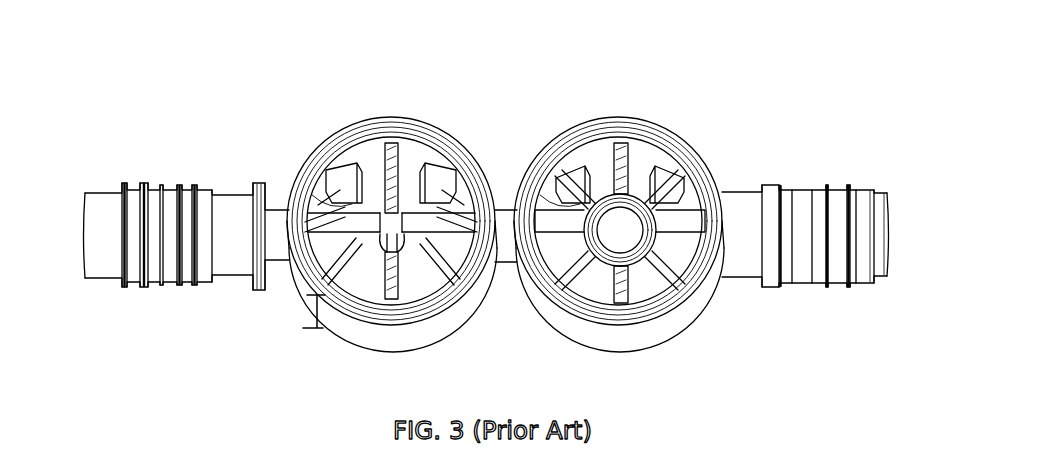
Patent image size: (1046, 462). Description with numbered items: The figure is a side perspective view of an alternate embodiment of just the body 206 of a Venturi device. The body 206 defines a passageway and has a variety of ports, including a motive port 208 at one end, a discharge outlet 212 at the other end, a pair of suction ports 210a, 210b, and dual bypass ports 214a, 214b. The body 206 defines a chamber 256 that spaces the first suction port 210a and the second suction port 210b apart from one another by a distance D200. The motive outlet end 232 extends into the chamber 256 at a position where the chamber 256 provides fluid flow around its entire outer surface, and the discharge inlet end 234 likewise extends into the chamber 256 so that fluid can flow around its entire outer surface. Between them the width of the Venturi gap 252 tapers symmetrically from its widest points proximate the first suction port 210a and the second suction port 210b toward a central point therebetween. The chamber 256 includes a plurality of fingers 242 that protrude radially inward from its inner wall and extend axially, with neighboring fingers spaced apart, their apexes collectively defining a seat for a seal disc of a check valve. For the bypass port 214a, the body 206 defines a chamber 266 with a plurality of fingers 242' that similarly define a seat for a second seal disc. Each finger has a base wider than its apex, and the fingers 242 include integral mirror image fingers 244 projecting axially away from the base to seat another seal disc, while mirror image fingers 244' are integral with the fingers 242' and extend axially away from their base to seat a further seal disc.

The body 206 is at (483, 227).
The motive port 208 is at (84, 265).
The discharge outlet 212 is at (887, 267).
The first suction port 210a is at (396, 122).
The second suction port 210b is at (467, 318).
The bypass port 214a is at (637, 198).
The bypass port 214b is at (609, 214).
The motive outlet end 232 is at (375, 236).
The discharge inlet end 234 is at (406, 236).
The fingers 242 is at (374, 149).
The fingers 242' is at (615, 145).
The mirror image fingers 244 is at (299, 177).
The mirror image fingers 244' is at (532, 170).
The Venturi gap 252 is at (388, 214).
The chamber 256 is at (417, 150).
The chamber 266 is at (583, 148).
The distance D200 is at (312, 312).